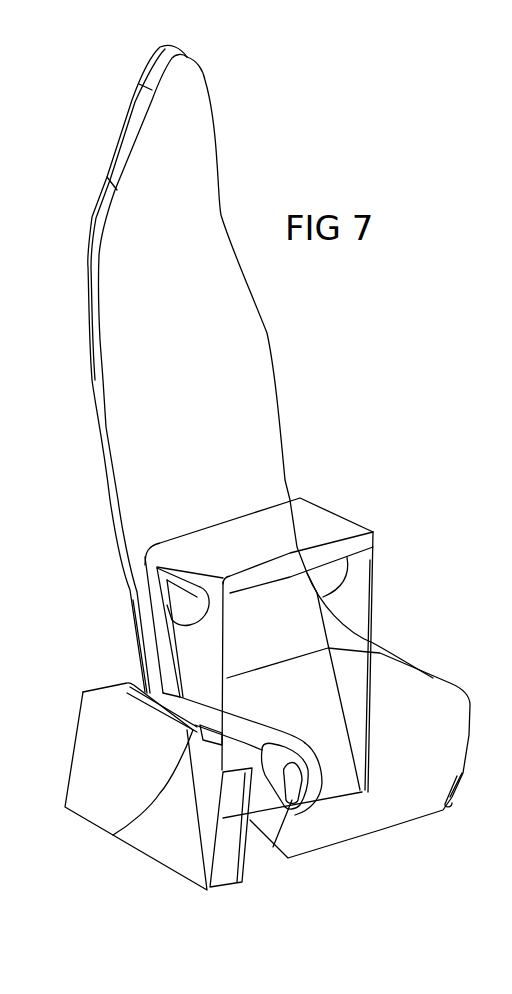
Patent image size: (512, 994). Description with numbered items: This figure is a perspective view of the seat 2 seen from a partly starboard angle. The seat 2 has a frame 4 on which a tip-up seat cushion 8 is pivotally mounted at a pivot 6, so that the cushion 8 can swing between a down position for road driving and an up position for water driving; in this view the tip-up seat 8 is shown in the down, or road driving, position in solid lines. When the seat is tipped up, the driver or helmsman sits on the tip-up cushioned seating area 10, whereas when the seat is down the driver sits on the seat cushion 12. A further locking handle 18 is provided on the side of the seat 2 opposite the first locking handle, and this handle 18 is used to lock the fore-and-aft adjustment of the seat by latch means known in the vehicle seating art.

The seat 2 is at (291, 347).
The frame 4 is at (283, 457).
The pivot 6 is at (113, 833).
The tip-up seat cushion 8 is at (377, 533).
The tip-up cushioned seating area 10 is at (262, 553).
The seat cushion 12 is at (311, 704).
The further locking handle 18 is at (295, 817).